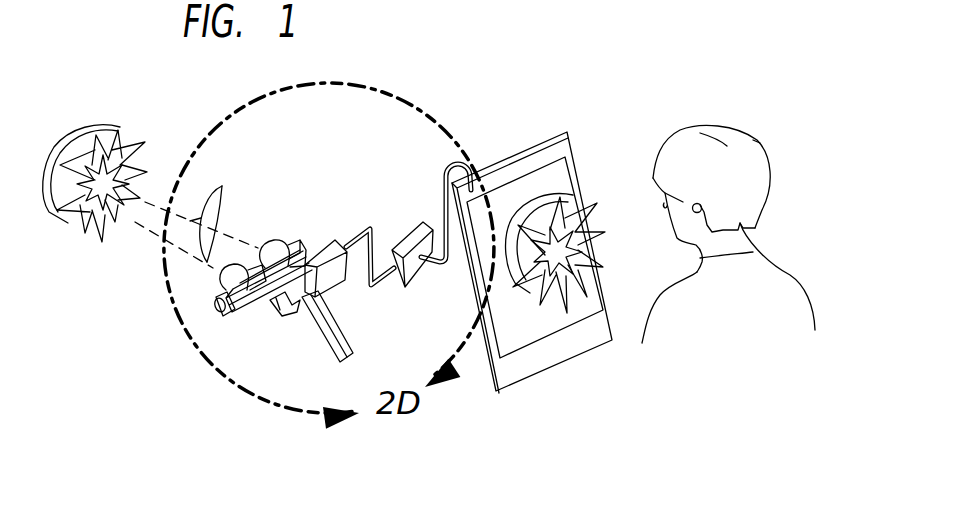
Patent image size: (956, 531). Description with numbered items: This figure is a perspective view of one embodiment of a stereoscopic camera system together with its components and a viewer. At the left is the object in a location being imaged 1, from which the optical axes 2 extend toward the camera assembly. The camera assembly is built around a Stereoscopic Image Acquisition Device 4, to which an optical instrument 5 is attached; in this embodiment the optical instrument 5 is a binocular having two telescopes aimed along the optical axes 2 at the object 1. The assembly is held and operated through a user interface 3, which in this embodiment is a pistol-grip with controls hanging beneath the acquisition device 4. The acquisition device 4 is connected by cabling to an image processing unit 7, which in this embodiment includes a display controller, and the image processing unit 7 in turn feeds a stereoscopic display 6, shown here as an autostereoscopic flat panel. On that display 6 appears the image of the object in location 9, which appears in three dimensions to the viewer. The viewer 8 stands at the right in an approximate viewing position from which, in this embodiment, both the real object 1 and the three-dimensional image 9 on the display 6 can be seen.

The object in a location being imaged 1 is at (120, 127).
The optical axes 2 is at (196, 224).
The user interface 3 is at (316, 355).
The stereoscopic image acquisition device 4 is at (331, 215).
The optical instrument 5 is at (208, 282).
The stereoscopic display 6 is at (555, 357).
The image processing unit 7 is at (406, 230).
The viewer 8 is at (727, 122).
The image of object in location 9 is at (597, 228).